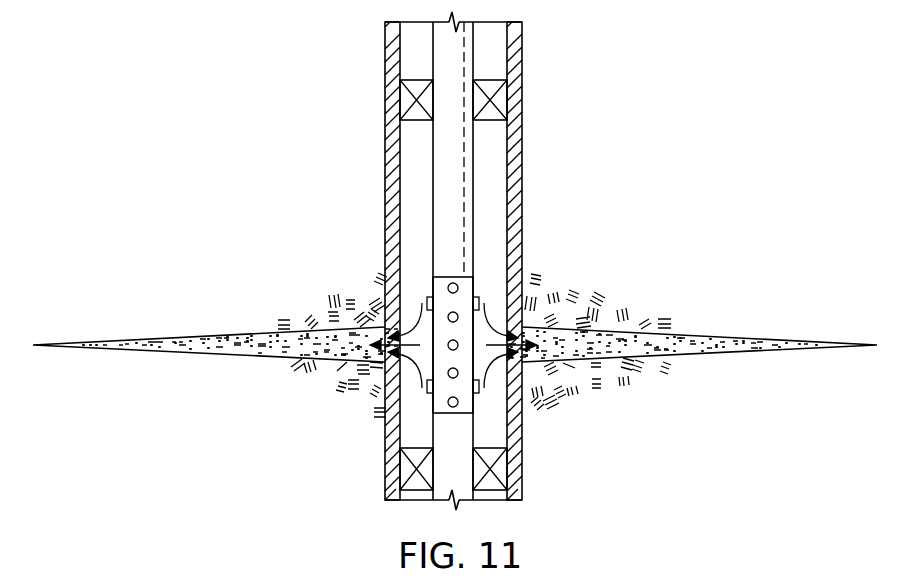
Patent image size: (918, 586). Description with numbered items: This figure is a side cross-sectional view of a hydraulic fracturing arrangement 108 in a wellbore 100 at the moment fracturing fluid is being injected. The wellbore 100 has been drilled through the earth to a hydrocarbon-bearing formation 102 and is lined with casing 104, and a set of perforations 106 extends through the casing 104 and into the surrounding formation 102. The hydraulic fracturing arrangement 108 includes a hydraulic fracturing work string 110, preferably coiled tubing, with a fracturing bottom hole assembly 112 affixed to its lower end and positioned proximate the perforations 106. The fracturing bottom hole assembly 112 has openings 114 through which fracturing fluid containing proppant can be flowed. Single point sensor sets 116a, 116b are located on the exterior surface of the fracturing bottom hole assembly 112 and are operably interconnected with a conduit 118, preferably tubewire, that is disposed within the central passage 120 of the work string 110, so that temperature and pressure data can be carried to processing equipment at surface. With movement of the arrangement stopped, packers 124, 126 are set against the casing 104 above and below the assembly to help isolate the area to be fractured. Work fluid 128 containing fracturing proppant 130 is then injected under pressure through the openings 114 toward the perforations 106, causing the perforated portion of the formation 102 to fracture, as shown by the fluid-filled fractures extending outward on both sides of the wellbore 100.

The wellbore 100 is at (523, 112).
The hydrocarbon-bearing formation 102 is at (318, 375).
The casing 104 is at (388, 173).
The perforations 106 is at (115, 350).
The hydraulic fracturing arrangement 108 is at (484, 187).
The hydraulic fracturing work string 110 is at (440, 48).
The fracturing bottom hole assembly 112 is at (459, 286).
The openings 114 is at (458, 404).
The single point sensor set 116a is at (428, 302).
The single point sensor set 116b is at (478, 386).
The conduit 118 is at (468, 47).
The central passage 120 is at (445, 138).
The packer 124 is at (420, 100).
The packer 126 is at (418, 478).
The work fluid 128 is at (145, 343).
The fracturing proppant 130 is at (255, 340).